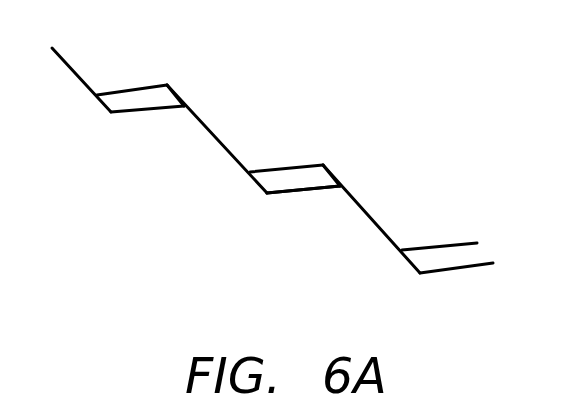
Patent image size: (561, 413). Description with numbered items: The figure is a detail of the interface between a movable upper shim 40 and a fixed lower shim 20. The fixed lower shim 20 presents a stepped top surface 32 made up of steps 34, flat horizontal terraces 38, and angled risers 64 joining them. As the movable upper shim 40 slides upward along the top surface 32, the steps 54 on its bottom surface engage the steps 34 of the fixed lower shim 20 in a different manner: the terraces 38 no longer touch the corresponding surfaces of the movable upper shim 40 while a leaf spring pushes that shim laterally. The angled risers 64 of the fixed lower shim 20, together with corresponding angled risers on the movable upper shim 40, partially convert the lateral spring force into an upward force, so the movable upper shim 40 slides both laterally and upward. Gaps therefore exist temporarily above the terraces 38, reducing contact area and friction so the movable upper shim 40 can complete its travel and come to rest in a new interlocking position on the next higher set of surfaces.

The fixed lower shim 20 is at (200, 257).
The top surface 32 is at (312, 193).
The steps 34 is at (184, 115).
The terraces 38 is at (147, 113).
The movable upper shim 40 is at (393, 112).
The steps 54 is at (251, 168).
The angled risers 64 is at (77, 75).